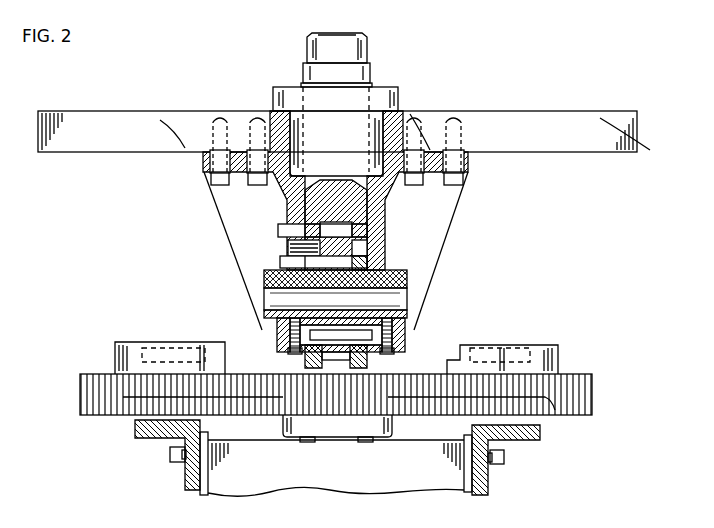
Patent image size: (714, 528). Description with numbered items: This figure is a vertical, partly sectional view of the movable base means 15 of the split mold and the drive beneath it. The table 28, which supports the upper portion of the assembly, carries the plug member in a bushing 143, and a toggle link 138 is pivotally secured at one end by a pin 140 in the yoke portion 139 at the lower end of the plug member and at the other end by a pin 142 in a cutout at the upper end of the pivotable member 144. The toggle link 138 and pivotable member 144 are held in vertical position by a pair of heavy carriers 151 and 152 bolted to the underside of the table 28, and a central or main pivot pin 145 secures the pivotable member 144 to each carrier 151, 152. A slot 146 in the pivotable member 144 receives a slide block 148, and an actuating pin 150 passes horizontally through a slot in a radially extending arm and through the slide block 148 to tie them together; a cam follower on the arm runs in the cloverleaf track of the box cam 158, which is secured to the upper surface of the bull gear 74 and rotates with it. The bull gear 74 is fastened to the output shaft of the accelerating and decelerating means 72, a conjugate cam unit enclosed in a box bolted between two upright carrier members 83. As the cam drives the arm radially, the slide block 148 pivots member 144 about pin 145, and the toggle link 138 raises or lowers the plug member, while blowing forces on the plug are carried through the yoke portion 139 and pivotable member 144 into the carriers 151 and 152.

The movable base means 15 is at (392, 32).
The table 28 is at (566, 125).
The means for imparting accelerating and decelerating motion 72 is at (437, 488).
The bull gear 74 is at (565, 380).
The upright carrier members 83 is at (190, 482).
The toggle link 138 is at (340, 250).
The yoke portion 139 is at (365, 217).
The pin 140 is at (300, 246).
The pin 142 is at (290, 258).
The bushing 143 is at (378, 92).
The pivotable member 144 is at (367, 278).
The central pivot pin 145 is at (407, 298).
The slot 146 is at (373, 353).
The slide block 148 is at (405, 328).
The actuating pin 150 is at (280, 337).
The carrier 151 is at (230, 198).
The carrier 152 is at (452, 199).
The box cam 158 is at (543, 350).